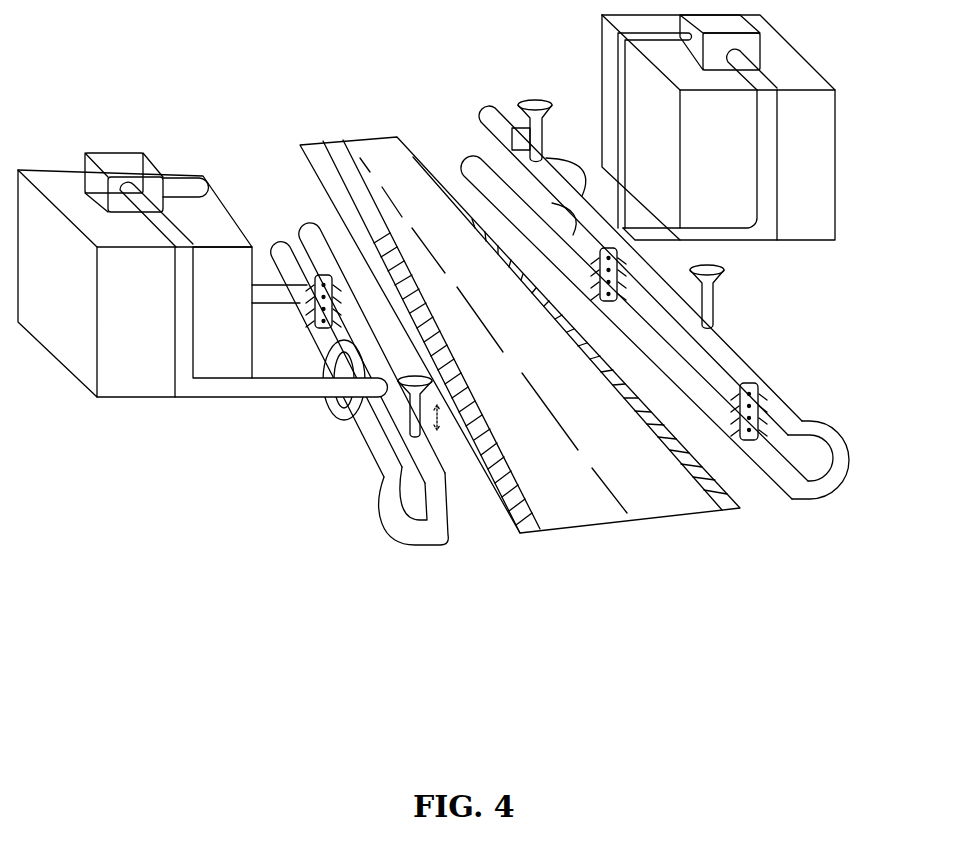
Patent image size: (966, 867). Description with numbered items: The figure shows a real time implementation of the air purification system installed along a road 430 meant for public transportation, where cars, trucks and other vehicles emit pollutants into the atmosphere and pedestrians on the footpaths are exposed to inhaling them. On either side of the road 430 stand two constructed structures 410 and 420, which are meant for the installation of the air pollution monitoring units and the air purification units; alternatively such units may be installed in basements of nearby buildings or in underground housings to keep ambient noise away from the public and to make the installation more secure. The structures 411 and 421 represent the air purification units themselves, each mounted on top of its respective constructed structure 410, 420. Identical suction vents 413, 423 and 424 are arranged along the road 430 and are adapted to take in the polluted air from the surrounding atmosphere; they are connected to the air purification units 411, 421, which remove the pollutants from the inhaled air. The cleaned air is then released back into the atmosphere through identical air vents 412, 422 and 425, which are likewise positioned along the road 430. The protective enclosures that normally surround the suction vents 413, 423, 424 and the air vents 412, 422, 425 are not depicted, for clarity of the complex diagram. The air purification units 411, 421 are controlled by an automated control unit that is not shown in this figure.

The constructed structure 410 is at (203, 283).
The air purification unit 411 is at (147, 200).
The air vent 412 is at (317, 267).
The suction vent 413 is at (408, 418).
The constructed structure 420 is at (718, 127).
The air purification unit 421 is at (720, 40).
The air vent 422 is at (630, 273).
The suction vent 423 is at (512, 102).
The suction vent 424 is at (737, 307).
The air vent 425 is at (775, 411).
The road 430 is at (660, 515).